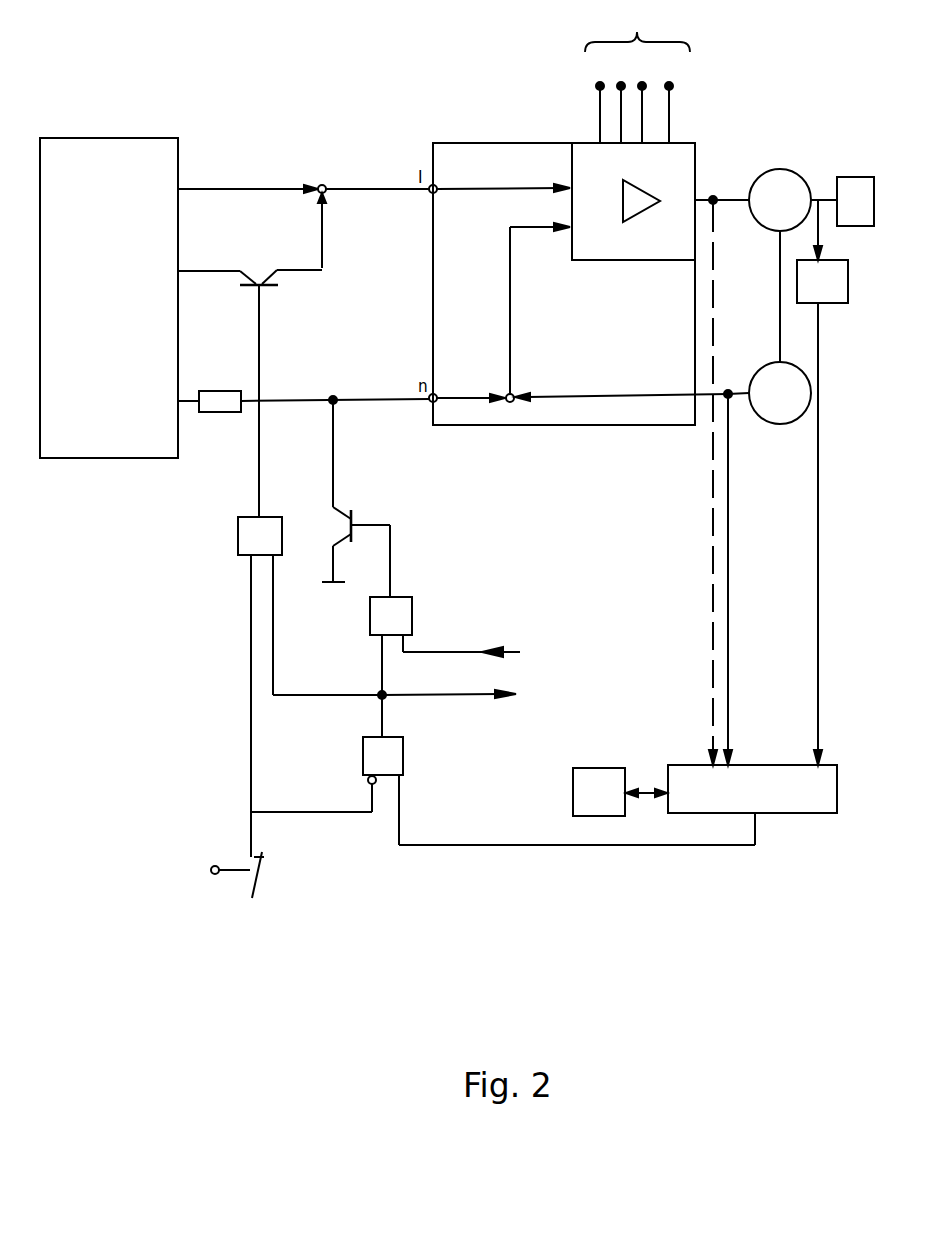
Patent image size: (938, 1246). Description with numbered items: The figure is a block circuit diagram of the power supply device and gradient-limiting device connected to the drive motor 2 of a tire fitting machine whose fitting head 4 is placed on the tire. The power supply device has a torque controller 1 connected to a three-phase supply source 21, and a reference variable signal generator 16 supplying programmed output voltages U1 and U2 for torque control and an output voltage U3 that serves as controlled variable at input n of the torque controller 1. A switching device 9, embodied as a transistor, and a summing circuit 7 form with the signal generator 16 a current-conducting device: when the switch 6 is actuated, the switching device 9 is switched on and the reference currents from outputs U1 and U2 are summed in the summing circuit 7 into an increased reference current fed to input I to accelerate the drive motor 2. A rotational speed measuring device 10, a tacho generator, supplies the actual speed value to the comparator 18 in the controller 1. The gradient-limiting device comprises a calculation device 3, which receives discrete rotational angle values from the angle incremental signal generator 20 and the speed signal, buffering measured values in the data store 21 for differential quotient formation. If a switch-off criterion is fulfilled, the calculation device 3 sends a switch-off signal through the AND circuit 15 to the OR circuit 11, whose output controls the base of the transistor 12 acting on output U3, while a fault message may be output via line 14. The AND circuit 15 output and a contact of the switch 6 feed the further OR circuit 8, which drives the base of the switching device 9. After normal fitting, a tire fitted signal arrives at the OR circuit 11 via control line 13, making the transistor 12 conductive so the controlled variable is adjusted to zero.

The torque controller 1 is at (478, 172).
The drive motor 2 is at (770, 175).
The calculation device 3 is at (797, 803).
The fitting head 4 is at (850, 183).
The switch 6 is at (216, 866).
The summing circuit 7 is at (326, 192).
The OR circuit 8 is at (238, 556).
The switching device 9 is at (268, 290).
The rotational speed measuring device 10 is at (780, 424).
The OR circuit 11 is at (412, 612).
The transistor 12 is at (354, 512).
The control line 13 is at (460, 652).
The line 14 is at (462, 697).
The AND circuit 15 is at (363, 752).
The reference variable signal generator 16 is at (133, 160).
The comparator 18 is at (506, 394).
The angle incremental signal generator 20 is at (840, 276).
The three-phase supply source 21 is at (573, 795).